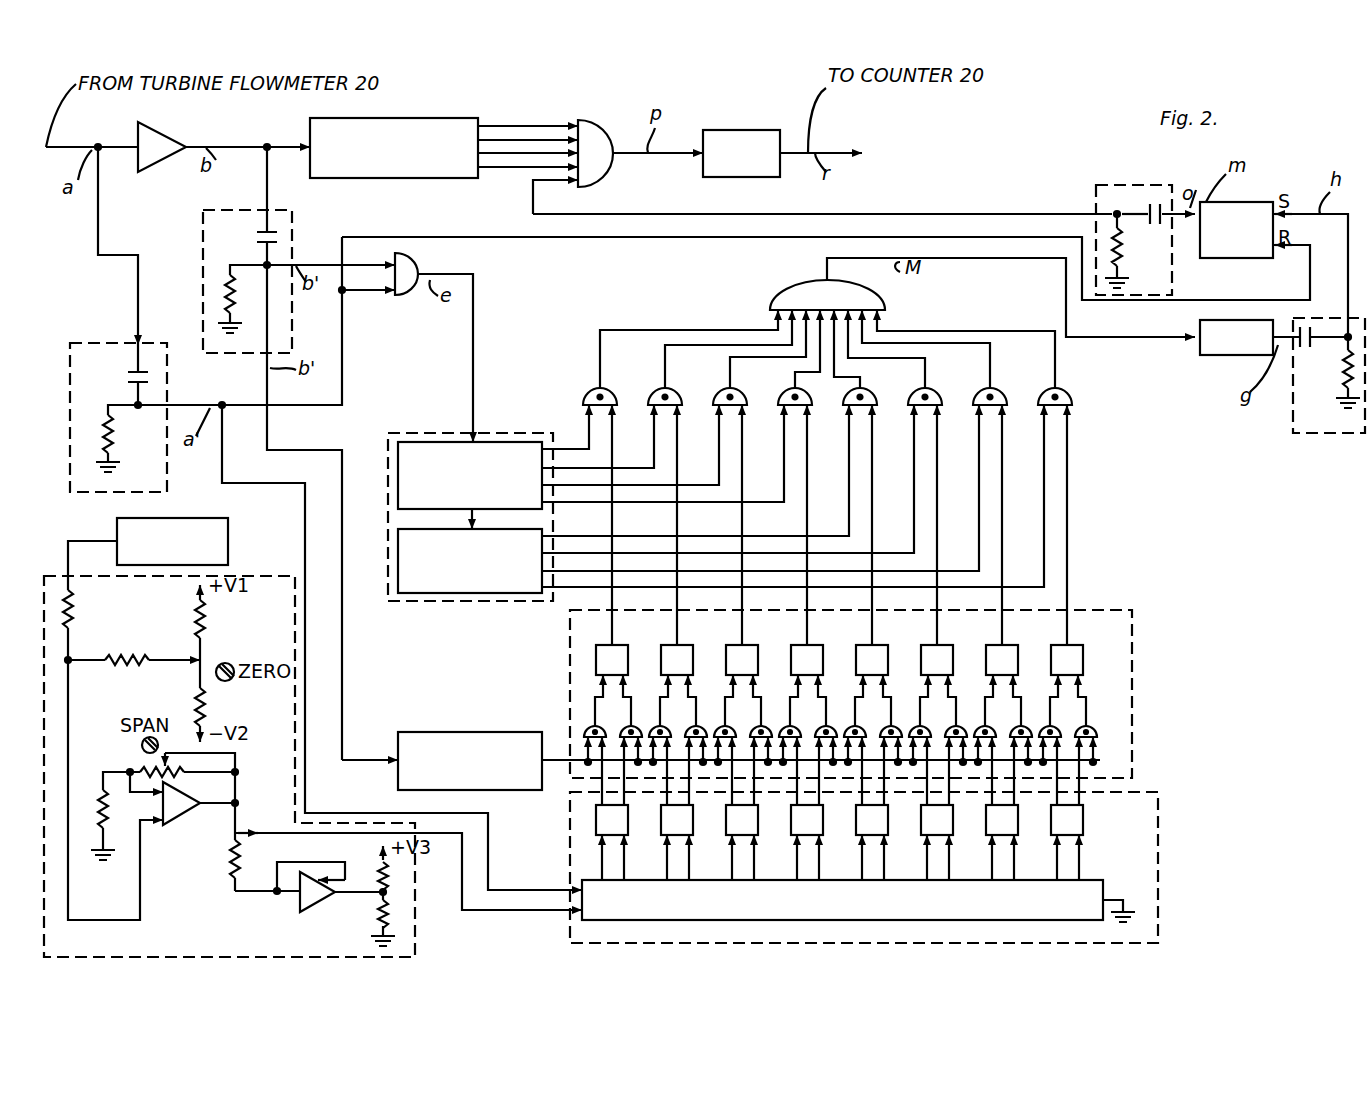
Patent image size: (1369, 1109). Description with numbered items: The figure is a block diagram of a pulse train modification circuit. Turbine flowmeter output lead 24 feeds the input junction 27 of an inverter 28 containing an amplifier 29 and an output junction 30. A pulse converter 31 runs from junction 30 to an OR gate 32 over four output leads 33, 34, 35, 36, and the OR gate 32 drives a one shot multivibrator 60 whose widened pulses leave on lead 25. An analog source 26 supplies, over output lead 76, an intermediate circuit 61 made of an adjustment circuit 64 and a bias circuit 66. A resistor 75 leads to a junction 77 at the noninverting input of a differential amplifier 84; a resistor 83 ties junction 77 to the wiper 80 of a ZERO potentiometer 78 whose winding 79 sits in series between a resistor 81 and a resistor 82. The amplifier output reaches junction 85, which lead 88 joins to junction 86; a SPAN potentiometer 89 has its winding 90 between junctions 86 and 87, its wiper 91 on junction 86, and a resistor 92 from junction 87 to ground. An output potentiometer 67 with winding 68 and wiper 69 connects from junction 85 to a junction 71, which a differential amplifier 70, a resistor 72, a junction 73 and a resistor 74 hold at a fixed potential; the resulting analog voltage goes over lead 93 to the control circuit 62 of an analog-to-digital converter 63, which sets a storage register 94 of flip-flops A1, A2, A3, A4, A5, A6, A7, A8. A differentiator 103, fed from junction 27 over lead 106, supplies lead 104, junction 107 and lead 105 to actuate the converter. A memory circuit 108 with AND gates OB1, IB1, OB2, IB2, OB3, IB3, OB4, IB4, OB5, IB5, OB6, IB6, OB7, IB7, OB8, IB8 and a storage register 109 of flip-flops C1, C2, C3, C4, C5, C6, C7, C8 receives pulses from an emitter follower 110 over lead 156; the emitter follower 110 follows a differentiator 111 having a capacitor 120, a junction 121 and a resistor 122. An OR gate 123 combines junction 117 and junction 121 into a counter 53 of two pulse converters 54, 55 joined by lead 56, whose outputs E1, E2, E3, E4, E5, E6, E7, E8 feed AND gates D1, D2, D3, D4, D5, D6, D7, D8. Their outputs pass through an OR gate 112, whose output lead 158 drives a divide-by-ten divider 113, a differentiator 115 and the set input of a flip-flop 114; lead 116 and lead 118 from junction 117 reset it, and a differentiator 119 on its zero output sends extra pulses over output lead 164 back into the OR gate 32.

The turbine flowmeter output lead 24 is at (46, 147).
The lead 25 is at (836, 153).
The analog source 26 is at (228, 541).
The input junction 27 is at (98, 147).
The inverter 28 is at (152, 122).
The amplifier 29 is at (186, 147).
The output junction 30 is at (267, 147).
The pulse converter 31 is at (405, 178).
The OR gate 32 is at (590, 184).
The output lead 33 is at (495, 126).
The output lead 34 is at (495, 140).
The output lead 35 is at (495, 153).
The output lead 36 is at (515, 167).
The counter 53 is at (500, 433).
The pulse converter 54 is at (398, 470).
The pulse converter 55 is at (398, 552).
The lead 56 is at (470, 523).
The one shot multivibrator 60 is at (756, 130).
The intermediate circuit 61 is at (418, 933).
The control circuit 62 is at (1103, 884).
The analog-to-digital converter 63 is at (932, 840).
The adjustment circuit 64 is at (152, 900).
The bias circuit 66 is at (240, 891).
The output potentiometer 67 is at (225, 841).
The winding 68 is at (233, 833).
The wiper 69 is at (236, 840).
The differential amplifier 70 is at (315, 905).
The junction 71 is at (275, 893).
The resistor 72 is at (388, 875).
The junction 73 is at (386, 897).
The resistor 74 is at (383, 926).
The resistor 75 is at (72, 605).
The output lead 76 is at (76, 541).
The junction 77 is at (70, 660).
The potentiometer 78 is at (212, 658).
The winding 79 is at (200, 640).
The wiper 80 is at (168, 664).
The resistor 81 is at (206, 611).
The resistor 82 is at (206, 691).
The resistor 83 is at (135, 658).
The differential amplifier 84 is at (180, 816).
The junction 85 is at (236, 803).
The junction 86 is at (236, 770).
The junction 87 is at (128, 772).
The lead 88 is at (236, 775).
The potentiometer 89 is at (178, 750).
The winding 90 is at (172, 779).
The wiper 91 is at (165, 765).
The resistor 92 is at (100, 805).
The lead 93 is at (505, 910).
The storage register 94 is at (912, 808).
The differentiator 103 is at (100, 343).
The lead 104 is at (180, 405).
The lead 105 is at (489, 832).
The lead 106 is at (138, 291).
The junction 107 is at (225, 404).
The memory circuit 108 is at (927, 591).
The storage register 109 is at (915, 585).
The emitter follower 110 is at (428, 732).
The differentiator 111 is at (200, 272).
The OR gate 112 is at (780, 300).
The divide-by-10 divider 113 is at (1203, 355).
The flip-flop 114 is at (1220, 258).
The differentiator 115 is at (1338, 437).
The lead 116 is at (345, 375).
The junction 117 is at (342, 294).
The lead 118 is at (568, 237).
The differentiator 119 is at (1094, 188).
The capacitor 120 is at (264, 232).
The junction 121 is at (270, 264).
The resistor 122 is at (225, 292).
The OR gate 123 is at (418, 271).
The lead 156 is at (545, 760).
The output lead 158 is at (827, 258).
The output lead 164 is at (716, 214).
The AND gate D1 is at (596, 388).
The AND gate D2 is at (661, 388).
The AND gate D3 is at (726, 388).
The AND gate D4 is at (791, 394).
The AND gate D5 is at (858, 392).
The AND gate D6 is at (922, 388).
The AND gate D7 is at (987, 388).
The AND gate D8 is at (1052, 388).
The counter output E1 is at (589, 447).
The counter output E2 is at (654, 466).
The counter output E3 is at (719, 483).
The counter output E4 is at (784, 500).
The counter output E5 is at (849, 534).
The counter output E6 is at (914, 551).
The counter output E7 is at (979, 569).
The counter output E8 is at (1044, 585).
The flip-flop C1 is at (617, 585).
The flip-flop C2 is at (682, 585).
The flip-flop C3 is at (747, 585).
The flip-flop C4 is at (812, 585).
The flip-flop C5 is at (877, 585).
The flip-flop C6 is at (942, 585).
The flip-flop C7 is at (1007, 585).
The flip-flop C8 is at (1072, 585).
The AND gate OB1 is at (587, 720).
The AND gate OB2 is at (652, 720).
The AND gate OB3 is at (717, 720).
The AND gate OB4 is at (782, 720).
The AND gate OB5 is at (847, 720).
The AND gate OB6 is at (912, 720).
The AND gate OB7 is at (977, 720).
The AND gate OB8 is at (1042, 720).
The AND gate IB1 is at (623, 725).
The AND gate IB2 is at (688, 725).
The AND gate IB3 is at (753, 725).
The AND gate IB4 is at (818, 725).
The AND gate IB5 is at (883, 725).
The AND gate IB6 is at (948, 725).
The AND gate IB7 is at (1013, 725).
The AND gate IB8 is at (1078, 725).
The flip-flop A1 is at (624, 808).
The flip-flop A2 is at (689, 808).
The flip-flop A3 is at (754, 808).
The flip-flop A4 is at (819, 808).
The flip-flop A5 is at (884, 808).
The flip-flop A6 is at (949, 808).
The flip-flop A7 is at (1014, 808).
The flip-flop A8 is at (1079, 808).